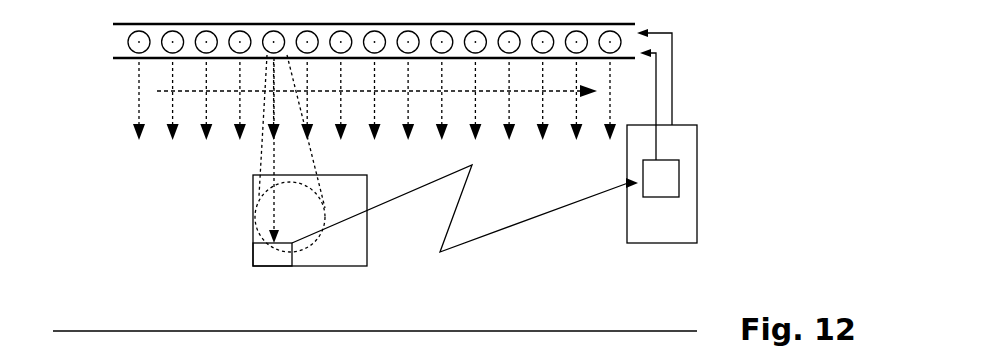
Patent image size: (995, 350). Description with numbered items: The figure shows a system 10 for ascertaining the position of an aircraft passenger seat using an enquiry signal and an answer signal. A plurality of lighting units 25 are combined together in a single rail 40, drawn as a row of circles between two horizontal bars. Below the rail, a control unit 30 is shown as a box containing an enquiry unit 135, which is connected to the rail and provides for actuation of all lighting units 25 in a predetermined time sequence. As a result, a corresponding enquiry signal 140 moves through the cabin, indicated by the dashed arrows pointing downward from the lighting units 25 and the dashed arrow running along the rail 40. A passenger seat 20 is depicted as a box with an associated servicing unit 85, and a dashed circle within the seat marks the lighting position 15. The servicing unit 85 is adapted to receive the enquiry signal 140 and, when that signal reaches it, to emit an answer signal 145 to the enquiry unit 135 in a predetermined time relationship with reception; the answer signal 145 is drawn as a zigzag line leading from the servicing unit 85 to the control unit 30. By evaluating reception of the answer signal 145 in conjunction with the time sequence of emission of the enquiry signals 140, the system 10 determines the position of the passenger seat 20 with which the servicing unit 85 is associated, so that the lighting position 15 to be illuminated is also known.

The system 10 is at (726, 118).
The lighting position 15 is at (258, 217).
The passenger seat 20 is at (335, 266).
The lighting units 25 is at (128, 49).
The control unit 30 is at (697, 230).
The rail 40 is at (102, 38).
The servicing unit 85 is at (252, 256).
The enquiry unit 135 is at (680, 181).
The enquiry signal 140 is at (140, 110).
The answer signal 145 is at (483, 238).